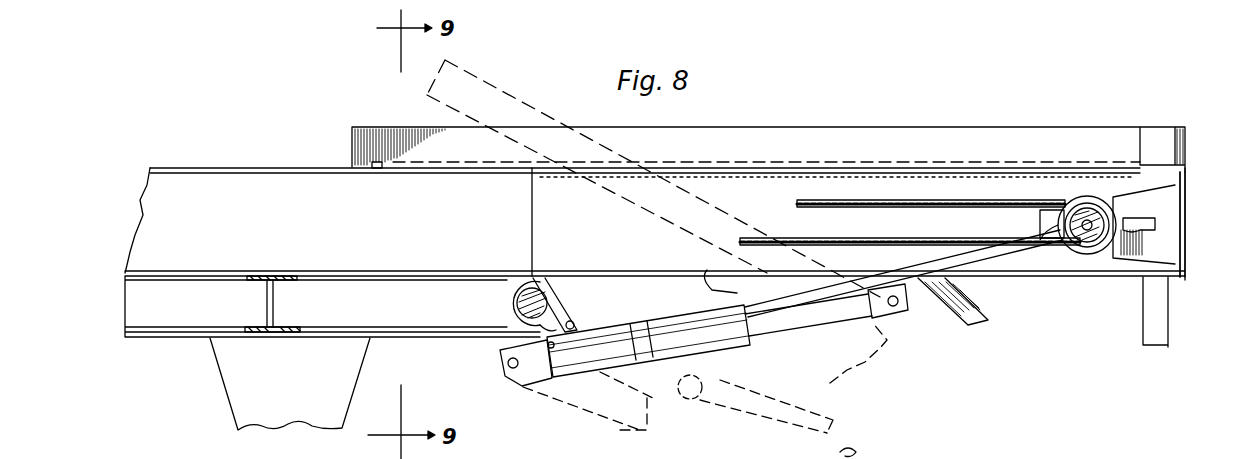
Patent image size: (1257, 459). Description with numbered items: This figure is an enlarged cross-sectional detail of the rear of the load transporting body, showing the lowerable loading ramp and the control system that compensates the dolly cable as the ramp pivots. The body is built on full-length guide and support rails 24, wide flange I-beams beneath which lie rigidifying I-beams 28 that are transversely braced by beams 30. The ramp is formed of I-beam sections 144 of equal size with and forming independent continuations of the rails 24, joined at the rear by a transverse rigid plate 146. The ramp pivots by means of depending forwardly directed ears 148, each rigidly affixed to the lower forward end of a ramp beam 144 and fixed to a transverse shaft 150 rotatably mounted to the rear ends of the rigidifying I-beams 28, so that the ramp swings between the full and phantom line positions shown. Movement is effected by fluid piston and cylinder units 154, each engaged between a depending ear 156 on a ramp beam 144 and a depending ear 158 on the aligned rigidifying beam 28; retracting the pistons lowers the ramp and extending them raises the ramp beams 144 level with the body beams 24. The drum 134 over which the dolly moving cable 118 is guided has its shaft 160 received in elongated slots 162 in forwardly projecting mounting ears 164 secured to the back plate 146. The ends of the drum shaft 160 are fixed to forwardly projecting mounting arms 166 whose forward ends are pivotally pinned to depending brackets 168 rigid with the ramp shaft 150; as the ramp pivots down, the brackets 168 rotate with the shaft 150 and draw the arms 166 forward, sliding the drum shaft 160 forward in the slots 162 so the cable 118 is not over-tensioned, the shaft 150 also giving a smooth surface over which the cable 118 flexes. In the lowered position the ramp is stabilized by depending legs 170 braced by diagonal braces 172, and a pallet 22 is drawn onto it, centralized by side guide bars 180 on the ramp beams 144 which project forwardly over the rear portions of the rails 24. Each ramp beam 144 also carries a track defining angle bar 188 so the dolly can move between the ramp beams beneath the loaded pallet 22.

The pallet 22 is at (706, 389).
The guide and support rails 24 is at (235, 168).
The rigidifying I-beam 28 is at (198, 303).
The transverse brace beams 30 is at (275, 310).
The dolly moving cable 118 is at (932, 200).
The pulley or drum 134 is at (1092, 252).
The ramp I-beam sections 144 is at (978, 281).
The transverse rigid plate 146 is at (1187, 193).
The depending forwardly directed ears 148 is at (535, 280).
The transverse shaft 150 is at (517, 303).
The fluid piston and cylinder units 154 is at (711, 352).
The depending ear 156 is at (890, 315).
The depending ear 158 is at (503, 349).
The drum shaft 160 is at (1080, 213).
The elongated slots 162 is at (1144, 215).
The mounting ears 164 is at (1165, 228).
The mounting arms 166 is at (925, 262).
The depending brackets 168 is at (562, 318).
The depending legs 170 is at (1170, 312).
The diagonal braces 172 is at (975, 310).
The side guide bars 180 is at (858, 123).
The track defining angle bar 188 is at (572, 258).